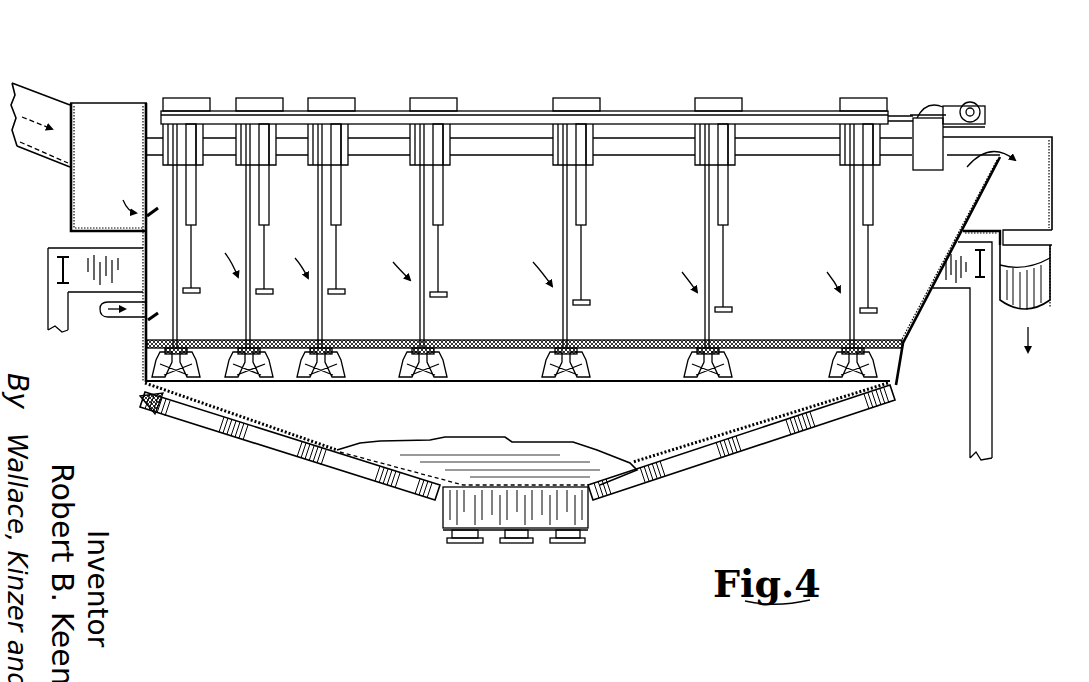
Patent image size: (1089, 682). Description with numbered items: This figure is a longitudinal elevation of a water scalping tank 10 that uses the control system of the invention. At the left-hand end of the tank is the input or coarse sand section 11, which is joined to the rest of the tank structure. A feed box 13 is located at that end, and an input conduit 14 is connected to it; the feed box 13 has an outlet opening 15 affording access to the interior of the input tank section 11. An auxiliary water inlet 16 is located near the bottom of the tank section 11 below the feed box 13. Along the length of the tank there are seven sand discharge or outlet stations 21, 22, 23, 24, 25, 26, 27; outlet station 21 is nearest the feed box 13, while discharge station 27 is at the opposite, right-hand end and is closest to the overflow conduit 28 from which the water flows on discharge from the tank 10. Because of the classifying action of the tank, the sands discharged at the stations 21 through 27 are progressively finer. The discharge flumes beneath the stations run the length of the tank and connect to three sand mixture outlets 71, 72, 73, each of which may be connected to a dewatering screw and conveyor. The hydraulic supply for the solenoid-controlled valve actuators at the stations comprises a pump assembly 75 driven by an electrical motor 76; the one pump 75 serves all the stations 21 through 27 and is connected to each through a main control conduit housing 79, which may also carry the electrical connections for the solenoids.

The water scalping tank 10 is at (505, 88).
The input or coarse sand section 11 is at (145, 335).
The feed box 13 is at (112, 110).
The input conduit 14 is at (42, 92).
The outlet opening 15 is at (148, 211).
The auxiliary water inlet 16 is at (127, 318).
The sand discharge station 21 is at (189, 330).
The sand discharge station 22 is at (259, 331).
The sand discharge station 23 is at (334, 330).
The sand discharge station 24 is at (440, 329).
The sand discharge station 25 is at (582, 329).
The sand discharge station 26 is at (725, 327).
The sand discharge station 27 is at (869, 326).
The overflow conduit 28 is at (1050, 312).
The sand mixture outlet 71 is at (463, 544).
The sand mixture outlet 72 is at (517, 544).
The sand mixture outlet 73 is at (565, 544).
The pump assembly 75 is at (932, 120).
The electrical motor 76 is at (976, 103).
The main control conduit housing 79 is at (888, 117).